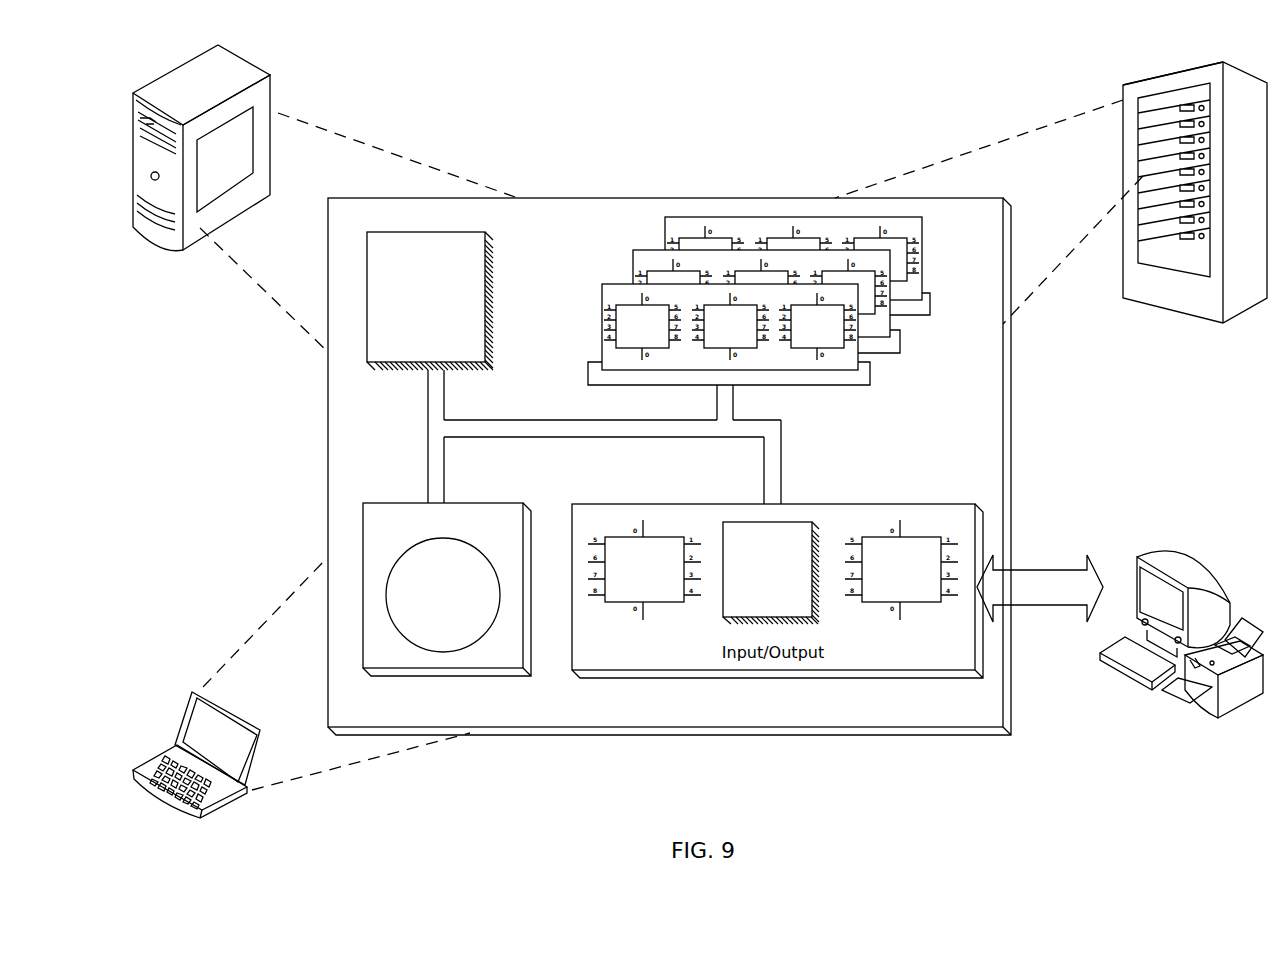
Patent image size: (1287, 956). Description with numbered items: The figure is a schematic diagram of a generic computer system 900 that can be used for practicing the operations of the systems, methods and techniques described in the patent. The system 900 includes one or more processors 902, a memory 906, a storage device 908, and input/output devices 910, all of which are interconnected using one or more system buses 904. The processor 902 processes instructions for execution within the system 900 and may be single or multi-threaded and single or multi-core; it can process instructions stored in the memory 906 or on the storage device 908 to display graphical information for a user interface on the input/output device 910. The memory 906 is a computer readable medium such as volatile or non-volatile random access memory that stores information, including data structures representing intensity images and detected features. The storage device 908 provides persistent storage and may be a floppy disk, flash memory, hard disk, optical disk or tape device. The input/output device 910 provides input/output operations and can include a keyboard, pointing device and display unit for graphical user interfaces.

The generic computer system 900 is at (510, 72).
The processor 902 is at (430, 301).
The system bus 904 is at (600, 438).
The memory 906 is at (931, 354).
The storage device 908 is at (447, 589).
The input/output device 910 is at (1137, 563).